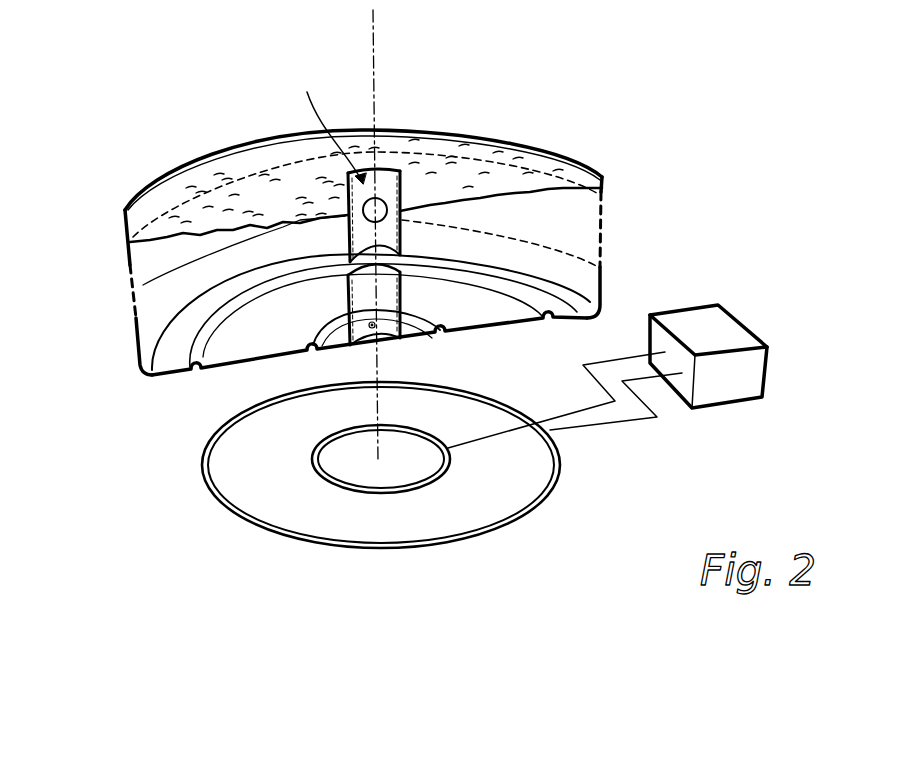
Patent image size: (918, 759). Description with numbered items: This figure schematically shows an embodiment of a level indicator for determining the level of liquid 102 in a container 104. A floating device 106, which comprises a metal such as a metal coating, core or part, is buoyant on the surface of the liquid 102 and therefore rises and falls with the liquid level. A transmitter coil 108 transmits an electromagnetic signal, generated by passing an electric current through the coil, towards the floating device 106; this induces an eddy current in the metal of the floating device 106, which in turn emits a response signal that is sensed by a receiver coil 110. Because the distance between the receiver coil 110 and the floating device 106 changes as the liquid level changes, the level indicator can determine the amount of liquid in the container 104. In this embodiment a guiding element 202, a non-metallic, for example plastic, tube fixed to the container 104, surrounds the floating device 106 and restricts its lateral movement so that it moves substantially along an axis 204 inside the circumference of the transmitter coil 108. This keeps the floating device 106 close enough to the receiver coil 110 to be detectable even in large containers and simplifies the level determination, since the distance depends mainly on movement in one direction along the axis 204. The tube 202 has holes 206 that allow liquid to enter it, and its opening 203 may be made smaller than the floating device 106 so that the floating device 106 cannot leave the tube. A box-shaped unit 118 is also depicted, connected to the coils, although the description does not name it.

The liquid 102 is at (150, 253).
The container 104 is at (503, 330).
The floating device 106 is at (382, 200).
The transmitter coil 108 is at (550, 492).
The receiver coil 110 is at (433, 480).
The controller 118 is at (702, 322).
The guiding element 202 is at (402, 243).
The opening 203 is at (327, 124).
The axis 204 is at (373, 50).
The holes 206 is at (400, 327).